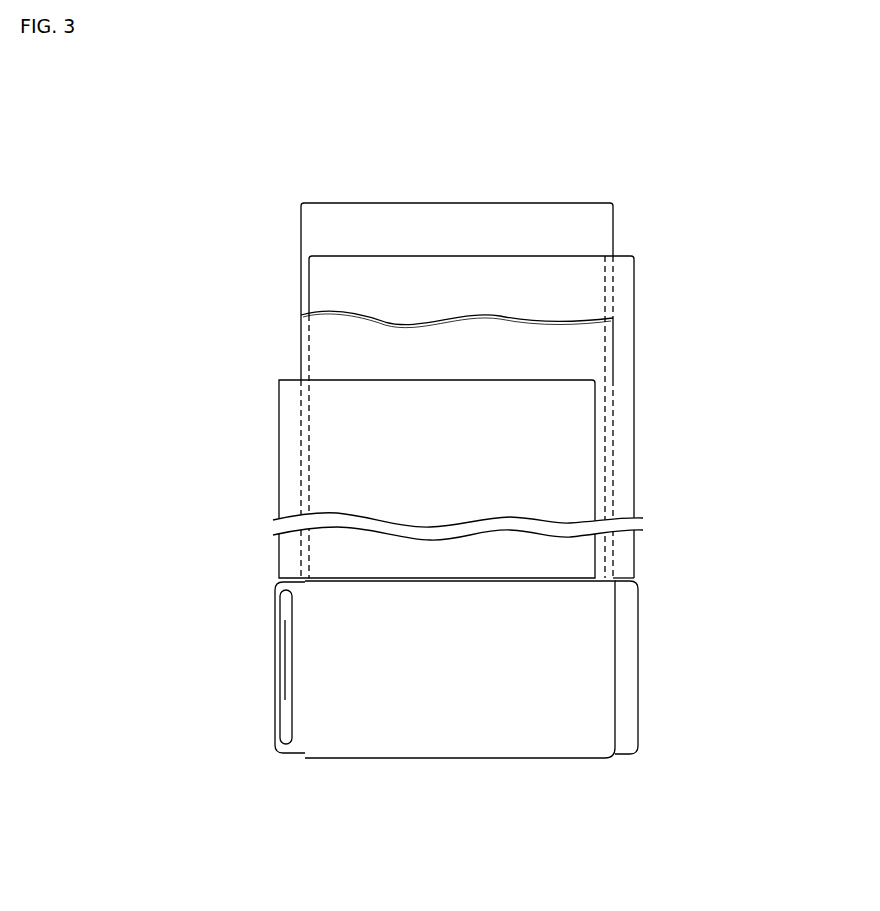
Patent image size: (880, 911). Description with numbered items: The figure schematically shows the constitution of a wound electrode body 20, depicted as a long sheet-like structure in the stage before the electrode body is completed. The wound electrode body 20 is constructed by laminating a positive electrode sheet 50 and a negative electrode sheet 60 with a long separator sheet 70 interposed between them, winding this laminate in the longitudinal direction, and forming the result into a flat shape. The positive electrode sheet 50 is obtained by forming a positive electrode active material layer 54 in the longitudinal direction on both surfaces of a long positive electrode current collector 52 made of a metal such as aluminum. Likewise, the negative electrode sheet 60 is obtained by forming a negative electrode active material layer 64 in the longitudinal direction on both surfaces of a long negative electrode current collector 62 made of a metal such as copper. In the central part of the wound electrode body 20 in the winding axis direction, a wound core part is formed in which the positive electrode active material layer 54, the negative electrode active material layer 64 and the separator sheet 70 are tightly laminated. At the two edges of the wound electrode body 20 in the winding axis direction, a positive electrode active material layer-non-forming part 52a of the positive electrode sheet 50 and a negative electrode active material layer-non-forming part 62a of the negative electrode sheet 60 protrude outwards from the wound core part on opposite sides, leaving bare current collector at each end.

The wound electrode body 20 is at (515, 738).
The positive electrode sheet 50 is at (375, 566).
The positive electrode current collector 52 is at (280, 510).
The positive electrode active material layer-non-forming part 52a is at (298, 660).
The positive electrode active material layer 54 is at (333, 392).
The negative electrode sheet 60 is at (523, 502).
The negative electrode current collector 62 is at (635, 426).
The negative electrode active material layer-non-forming part 62a is at (622, 394).
The negative electrode active material layer 64 is at (605, 275).
The separator sheet 70 is at (321, 223).